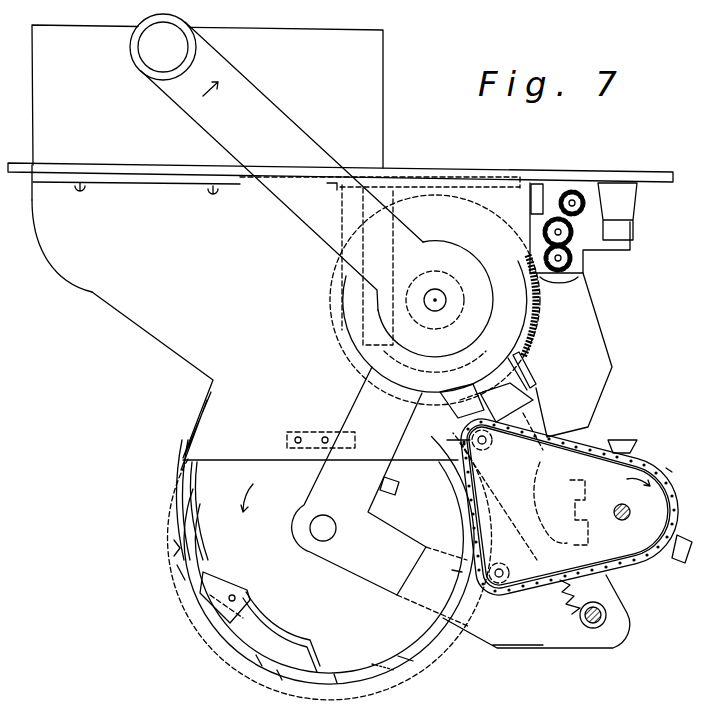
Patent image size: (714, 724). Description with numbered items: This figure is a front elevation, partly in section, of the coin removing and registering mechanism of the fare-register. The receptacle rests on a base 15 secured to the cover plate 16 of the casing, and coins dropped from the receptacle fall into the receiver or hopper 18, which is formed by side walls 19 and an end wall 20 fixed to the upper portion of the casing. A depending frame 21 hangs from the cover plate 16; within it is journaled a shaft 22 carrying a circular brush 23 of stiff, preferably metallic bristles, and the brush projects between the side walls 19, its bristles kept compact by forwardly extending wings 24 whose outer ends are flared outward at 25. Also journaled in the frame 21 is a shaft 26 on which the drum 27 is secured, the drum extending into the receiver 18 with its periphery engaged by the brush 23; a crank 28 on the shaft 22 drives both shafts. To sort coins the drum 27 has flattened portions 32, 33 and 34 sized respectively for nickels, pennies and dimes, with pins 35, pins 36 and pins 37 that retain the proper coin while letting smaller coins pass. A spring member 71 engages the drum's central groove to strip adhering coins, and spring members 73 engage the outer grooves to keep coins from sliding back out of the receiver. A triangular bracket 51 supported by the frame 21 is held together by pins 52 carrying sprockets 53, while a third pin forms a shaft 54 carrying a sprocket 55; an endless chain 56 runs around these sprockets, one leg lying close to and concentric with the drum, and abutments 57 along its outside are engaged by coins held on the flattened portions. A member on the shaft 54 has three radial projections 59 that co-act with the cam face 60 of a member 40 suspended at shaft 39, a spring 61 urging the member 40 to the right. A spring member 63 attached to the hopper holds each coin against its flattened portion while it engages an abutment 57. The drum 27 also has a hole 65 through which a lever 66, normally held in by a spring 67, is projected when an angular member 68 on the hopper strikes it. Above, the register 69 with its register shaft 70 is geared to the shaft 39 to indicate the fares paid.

The base 15 is at (207, 96).
The cover plate 16 is at (24, 168).
The receiver 18 is at (279, 312).
The side walls 19 is at (378, 342).
The end wall 20 is at (92, 291).
The depending frame 21 is at (490, 252).
The shaft 22 is at (436, 292).
The circular brush 23 is at (540, 302).
The wings 24 is at (520, 398).
The flared outer ends 25 is at (527, 386).
The shaft 26 is at (323, 521).
The drum 27 is at (330, 566).
The crank 28 is at (276, 162).
The flattened portions 32 is at (231, 630).
The flattened portions 33 is at (409, 669).
The flattened portions 34 is at (180, 574).
The pins 35 is at (279, 683).
The pins 36 is at (381, 679).
The pins 37 is at (177, 546).
The shaft 39 is at (570, 258).
The member 40 is at (574, 355).
The triangular bracket 51 is at (564, 506).
The pins 52 is at (488, 444).
The sprockets 53 is at (493, 603).
The shaft 54 is at (630, 512).
The sprocket 55 is at (641, 512).
The endless chain 56 is at (680, 475).
The abutments 57 is at (462, 413).
The radial projections 59 is at (625, 441).
The cam face 60 is at (551, 502).
The spring 61 is at (576, 604).
The spring member 63 is at (447, 577).
The hole 65 is at (339, 687).
The lever 66 is at (280, 645).
The spring 67 is at (199, 563).
The angular member 68 is at (300, 434).
The register 69 is at (580, 220).
The register shaft 70 is at (575, 205).
The spring member 71 is at (180, 485).
The spring members 73 is at (184, 443).